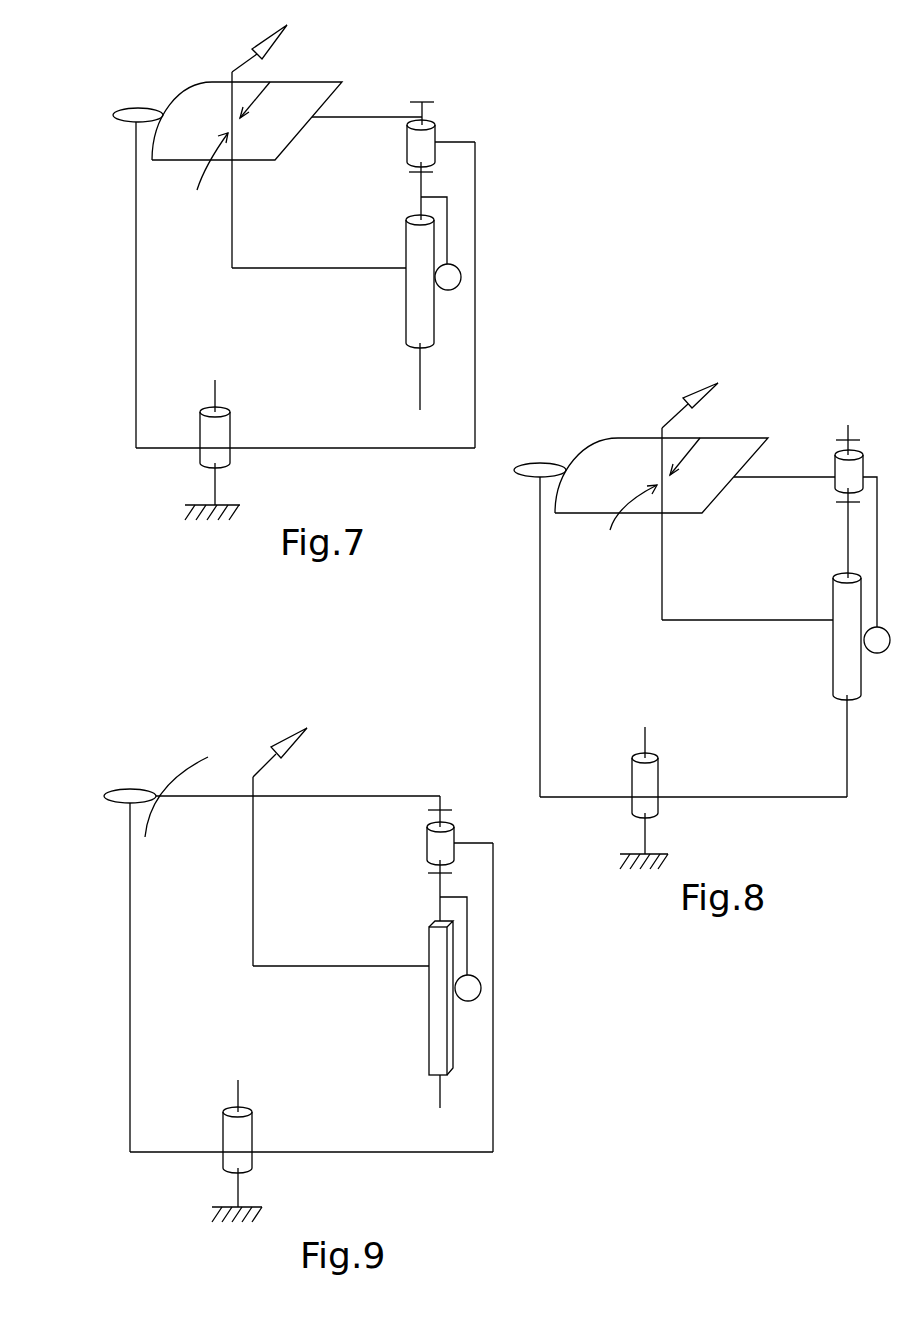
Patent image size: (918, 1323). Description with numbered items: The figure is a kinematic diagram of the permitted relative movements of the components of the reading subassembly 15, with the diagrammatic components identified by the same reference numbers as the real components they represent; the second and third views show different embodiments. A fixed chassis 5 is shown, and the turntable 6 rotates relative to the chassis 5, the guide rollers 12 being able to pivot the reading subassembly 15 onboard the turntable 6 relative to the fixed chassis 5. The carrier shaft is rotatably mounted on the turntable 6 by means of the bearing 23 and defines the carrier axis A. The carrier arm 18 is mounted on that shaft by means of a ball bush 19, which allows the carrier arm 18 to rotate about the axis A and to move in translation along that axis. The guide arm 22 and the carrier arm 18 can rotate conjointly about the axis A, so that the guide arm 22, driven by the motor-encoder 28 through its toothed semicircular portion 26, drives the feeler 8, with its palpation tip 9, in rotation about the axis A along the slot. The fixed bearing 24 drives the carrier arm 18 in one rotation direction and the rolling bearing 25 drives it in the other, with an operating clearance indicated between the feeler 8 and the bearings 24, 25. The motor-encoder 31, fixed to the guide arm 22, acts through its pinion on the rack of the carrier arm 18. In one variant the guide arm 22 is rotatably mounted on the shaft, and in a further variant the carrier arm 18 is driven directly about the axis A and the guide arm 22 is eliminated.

In FIG. 7, the chassis 5 is at (238, 505).
In FIG. 8, the chassis 5 is at (620, 854).
In FIG. 9, the chassis 5 is at (262, 1207).
In FIG. 7, the turntable 6 is at (476, 356).
In FIG. 8, the turntable 6 is at (848, 770).
In FIG. 9, the turntable 6 is at (494, 1058).
In FIG. 7, the feeler 8 is at (231, 252).
In FIG. 8, the feeler 8 is at (662, 605).
In FIG. 9, the feeler 8 is at (253, 920).
In FIG. 7, the palpation tip 9 is at (265, 38).
In FIG. 8, the palpation tip 9 is at (690, 402).
In FIG. 9, the palpation tip 9 is at (285, 743).
In FIG. 7, the guide rollers 12 is at (230, 421).
In FIG. 8, the guide rollers 12 is at (645, 783).
In FIG. 9, the guide rollers 12 is at (243, 1133).
In FIG. 7, the reading subassembly 15 is at (120, 237).
In FIG. 8, the reading subassembly 15 is at (527, 628).
In FIG. 9, the reading subassembly 15 is at (112, 977).
In FIG. 7, the carrier arm 18 is at (297, 268).
In FIG. 8, the carrier arm 18 is at (728, 620).
In FIG. 9, the carrier arm 18 is at (296, 966).
In FIG. 7, the ball bush 19 is at (416, 310).
In FIG. 8, the ball bush 19 is at (843, 655).
In FIG. 9, the ball bush 19 is at (437, 1017).
In FIG. 7, the guide arm 22 is at (390, 116).
In FIG. 8, the guide arm 22 is at (788, 477).
In FIG. 9, the guide arm 22 is at (350, 795).
In FIG. 7, the bearing 23 is at (413, 148).
In FIG. 8, the bearing 23 is at (855, 470).
In FIG. 9, the bearing 23 is at (437, 845).
In FIG. 7, the fixed bearing 24 is at (268, 95).
In FIG. 8, the fixed bearing 24 is at (715, 445).
In FIG. 7, the rolling bearing 25 is at (199, 189).
In FIG. 8, the rolling bearing 25 is at (610, 530).
In FIG. 7, the toothed semicircular portion 26 is at (174, 108).
In FIG. 8, the toothed semicircular portion 26 is at (583, 458).
In FIG. 9, the toothed semicircular portion 26 is at (178, 770).
In FIG. 7, the motor-encoder 28 is at (132, 111).
In FIG. 8, the motor-encoder 28 is at (528, 478).
In FIG. 9, the motor-encoder 28 is at (120, 793).
In FIG. 7, the motor-encoder 31 is at (462, 272).
In FIG. 8, the motor-encoder 31 is at (879, 653).
In FIG. 9, the motor-encoder 31 is at (480, 985).
In FIG. 7, the carrier axis A is at (420, 375).
In FIG. 8, the carrier axis A is at (843, 735).
In FIG. 9, the carrier axis A is at (439, 1098).